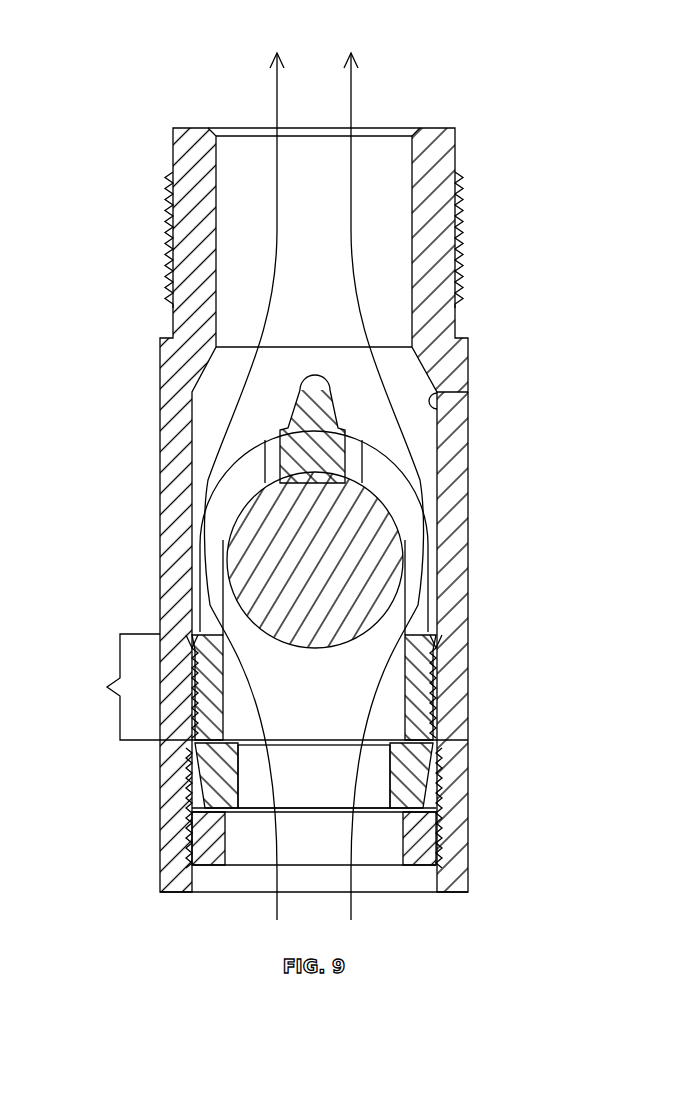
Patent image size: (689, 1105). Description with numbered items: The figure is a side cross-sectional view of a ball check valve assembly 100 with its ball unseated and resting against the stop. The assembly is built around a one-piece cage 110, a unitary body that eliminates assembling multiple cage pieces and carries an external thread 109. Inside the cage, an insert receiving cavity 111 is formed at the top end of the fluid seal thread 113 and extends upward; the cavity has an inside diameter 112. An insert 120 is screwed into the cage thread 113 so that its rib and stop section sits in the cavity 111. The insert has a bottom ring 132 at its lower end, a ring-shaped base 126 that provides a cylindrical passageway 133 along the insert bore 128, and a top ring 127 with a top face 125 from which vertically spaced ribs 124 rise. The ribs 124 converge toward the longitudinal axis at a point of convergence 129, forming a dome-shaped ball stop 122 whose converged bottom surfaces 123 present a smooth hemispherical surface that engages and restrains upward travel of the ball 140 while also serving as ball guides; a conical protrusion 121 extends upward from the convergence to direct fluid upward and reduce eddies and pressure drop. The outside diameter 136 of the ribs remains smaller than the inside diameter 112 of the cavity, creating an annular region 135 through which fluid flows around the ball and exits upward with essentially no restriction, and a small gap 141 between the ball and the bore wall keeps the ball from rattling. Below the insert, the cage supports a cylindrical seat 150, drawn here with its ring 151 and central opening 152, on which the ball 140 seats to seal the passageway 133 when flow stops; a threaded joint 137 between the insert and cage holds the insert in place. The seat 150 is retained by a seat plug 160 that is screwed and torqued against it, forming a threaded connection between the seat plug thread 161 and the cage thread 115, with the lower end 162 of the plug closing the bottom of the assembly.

The ball check valve assembly 100 is at (460, 39).
The external threads 109 is at (356, 240).
The one-piece cage 110 is at (354, 486).
The insert receiving cavity 111 is at (382, 420).
The inside diameter 112 is at (488, 397).
The fluid seal thread 113 is at (370, 693).
The cage thread 115 is at (197, 882).
The insert 120 is at (315, 434).
The conical protrusion 121 is at (205, 372).
The ball stop 122 is at (213, 452).
The bottom surface of the ribs 123 is at (254, 531).
The ribs 124 is at (315, 527).
The top face 125 is at (315, 627).
The base 126 is at (114, 687).
The top ring 127 is at (315, 682).
The insert bore 128 is at (476, 678).
The point of convergence 129 is at (221, 461).
The bottom ring 132 is at (354, 746).
The passageway 133 is at (314, 678).
The annular region 135 is at (385, 561).
The outside diameter 136 is at (476, 581).
The threaded joint 137 is at (137, 764).
The ball 140 is at (387, 560).
The clearance gap 141 is at (478, 604).
The seat 150 is at (315, 838).
The retainer ring 151 is at (370, 775).
The ring opening 152 is at (393, 782).
The seat plug 160 is at (370, 838).
The seat plug thread 161 is at (367, 823).
The nut lower end 162 is at (390, 862).